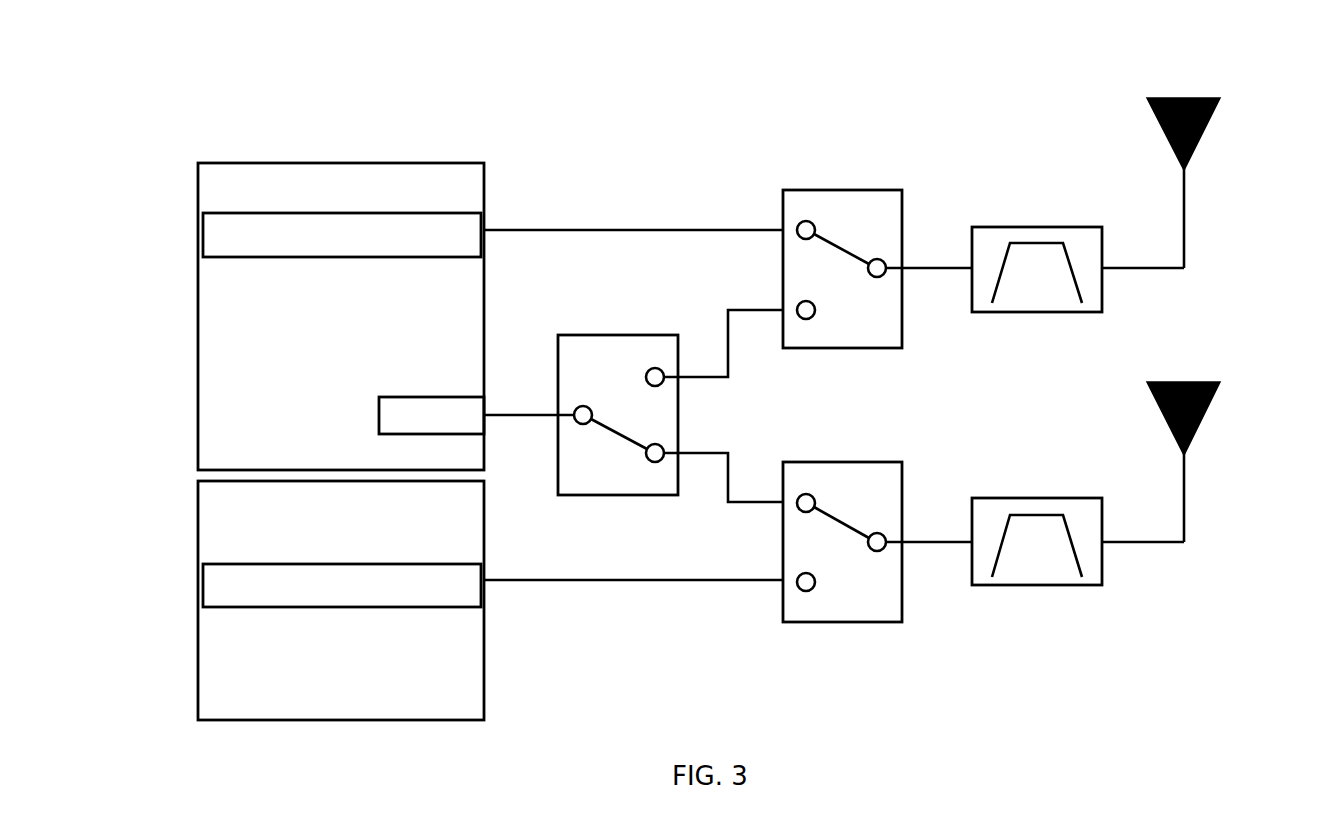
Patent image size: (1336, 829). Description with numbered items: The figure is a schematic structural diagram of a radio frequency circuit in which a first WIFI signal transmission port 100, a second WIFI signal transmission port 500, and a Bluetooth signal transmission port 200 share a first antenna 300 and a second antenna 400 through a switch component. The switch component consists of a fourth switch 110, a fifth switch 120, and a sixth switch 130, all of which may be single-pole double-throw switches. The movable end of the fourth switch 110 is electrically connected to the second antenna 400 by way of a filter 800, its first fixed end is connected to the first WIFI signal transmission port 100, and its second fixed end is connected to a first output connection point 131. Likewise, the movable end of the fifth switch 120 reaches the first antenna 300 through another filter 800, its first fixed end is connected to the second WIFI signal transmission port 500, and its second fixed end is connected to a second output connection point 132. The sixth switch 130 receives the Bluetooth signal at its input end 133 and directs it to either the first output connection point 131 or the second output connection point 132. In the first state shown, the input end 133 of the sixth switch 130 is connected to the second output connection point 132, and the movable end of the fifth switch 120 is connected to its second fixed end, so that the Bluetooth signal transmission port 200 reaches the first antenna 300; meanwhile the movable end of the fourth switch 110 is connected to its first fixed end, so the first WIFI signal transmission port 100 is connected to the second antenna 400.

The first WIFI signal transmission port 100 is at (198, 572).
The second WIFI signal transmission port 500 is at (198, 228).
The Bluetooth signal transmission port 200 is at (430, 397).
The fourth switch 110 is at (843, 490).
The fifth switch 120 is at (828, 213).
The sixth switch 130 is at (659, 423).
The first output connection point 131 is at (647, 467).
The second output connection point 132 is at (682, 370).
The input end of the sixth switch 133 is at (572, 422).
The filter 800 is at (1002, 237).
The first antenna 300 is at (1190, 95).
The second antenna 400 is at (1185, 380).